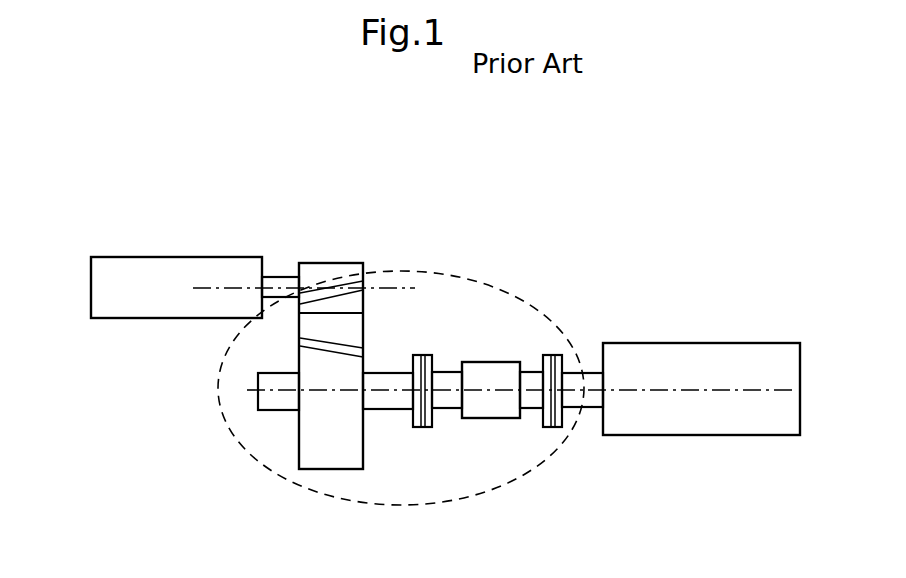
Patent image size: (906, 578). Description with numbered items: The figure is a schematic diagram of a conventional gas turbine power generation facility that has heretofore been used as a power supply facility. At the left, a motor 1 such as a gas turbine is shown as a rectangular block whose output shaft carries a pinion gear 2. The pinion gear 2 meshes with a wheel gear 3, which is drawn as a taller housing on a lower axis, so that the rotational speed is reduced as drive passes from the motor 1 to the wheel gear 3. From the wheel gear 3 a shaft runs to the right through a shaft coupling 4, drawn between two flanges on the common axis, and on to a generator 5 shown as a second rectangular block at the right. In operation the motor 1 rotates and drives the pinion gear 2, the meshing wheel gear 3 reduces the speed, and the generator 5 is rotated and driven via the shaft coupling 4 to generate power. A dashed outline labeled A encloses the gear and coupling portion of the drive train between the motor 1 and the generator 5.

The motor 1 is at (150, 282).
The pinion gear 2 is at (333, 275).
The wheel gear 3 is at (313, 458).
The shaft coupling 4 is at (487, 346).
The generator 5 is at (693, 363).
The drive unit region A is at (519, 287).